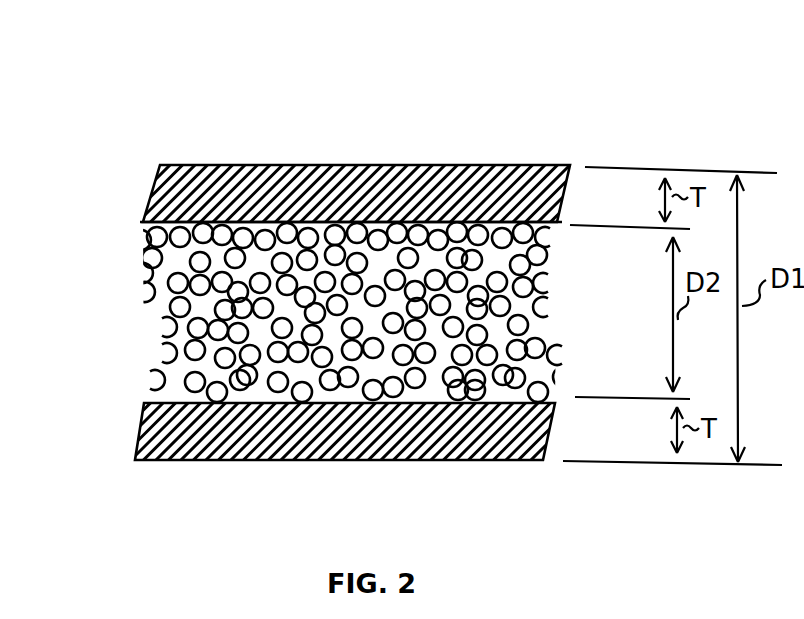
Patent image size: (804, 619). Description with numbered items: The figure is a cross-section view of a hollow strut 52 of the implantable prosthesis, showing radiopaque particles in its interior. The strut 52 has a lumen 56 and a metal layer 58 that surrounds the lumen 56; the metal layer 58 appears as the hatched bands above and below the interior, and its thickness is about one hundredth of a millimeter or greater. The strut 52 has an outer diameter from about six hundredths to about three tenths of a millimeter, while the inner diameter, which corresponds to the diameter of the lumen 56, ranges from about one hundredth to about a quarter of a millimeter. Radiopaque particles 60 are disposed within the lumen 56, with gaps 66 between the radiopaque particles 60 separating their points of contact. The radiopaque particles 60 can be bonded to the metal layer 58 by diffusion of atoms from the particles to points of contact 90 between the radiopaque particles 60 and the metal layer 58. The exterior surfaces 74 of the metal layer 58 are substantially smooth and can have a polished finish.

The strut 52 is at (422, 77).
The metal layer 58 is at (104, 163).
The exterior surface 74 is at (517, 167).
The lumen 56 is at (113, 385).
The radiopaque particles 60 is at (563, 352).
The gaps 66 is at (433, 388).
The points of contact 90 is at (222, 402).